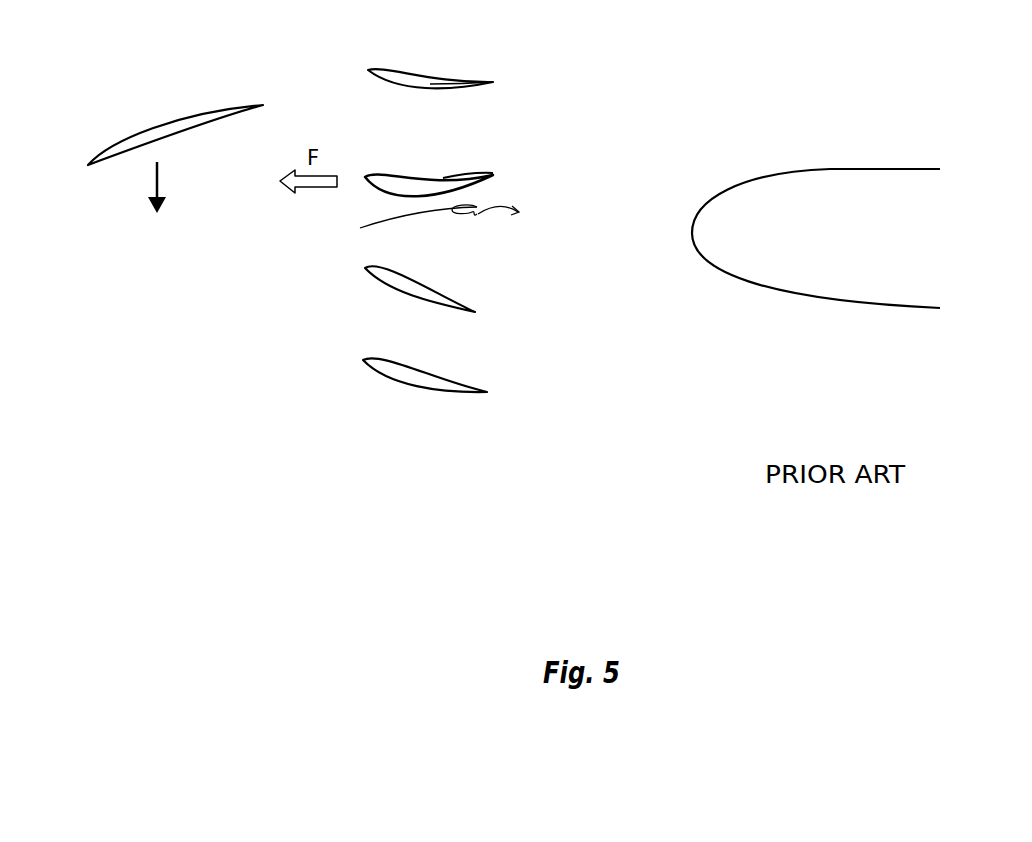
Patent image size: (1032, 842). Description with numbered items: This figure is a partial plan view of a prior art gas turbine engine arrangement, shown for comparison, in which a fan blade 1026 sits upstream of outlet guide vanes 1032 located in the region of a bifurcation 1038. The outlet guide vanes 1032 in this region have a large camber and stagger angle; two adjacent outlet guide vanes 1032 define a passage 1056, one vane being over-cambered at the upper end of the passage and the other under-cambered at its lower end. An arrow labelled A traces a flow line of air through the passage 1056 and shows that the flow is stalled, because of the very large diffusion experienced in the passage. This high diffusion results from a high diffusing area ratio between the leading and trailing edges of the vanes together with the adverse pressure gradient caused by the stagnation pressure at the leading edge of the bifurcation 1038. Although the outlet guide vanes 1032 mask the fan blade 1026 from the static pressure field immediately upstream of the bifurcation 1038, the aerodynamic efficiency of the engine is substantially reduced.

The deflected airfoil section 1026 is at (180, 130).
The outlet guide vanes 1032 is at (458, 83).
The prior art blunt body 1038 is at (882, 215).
The passage 1056 is at (470, 257).